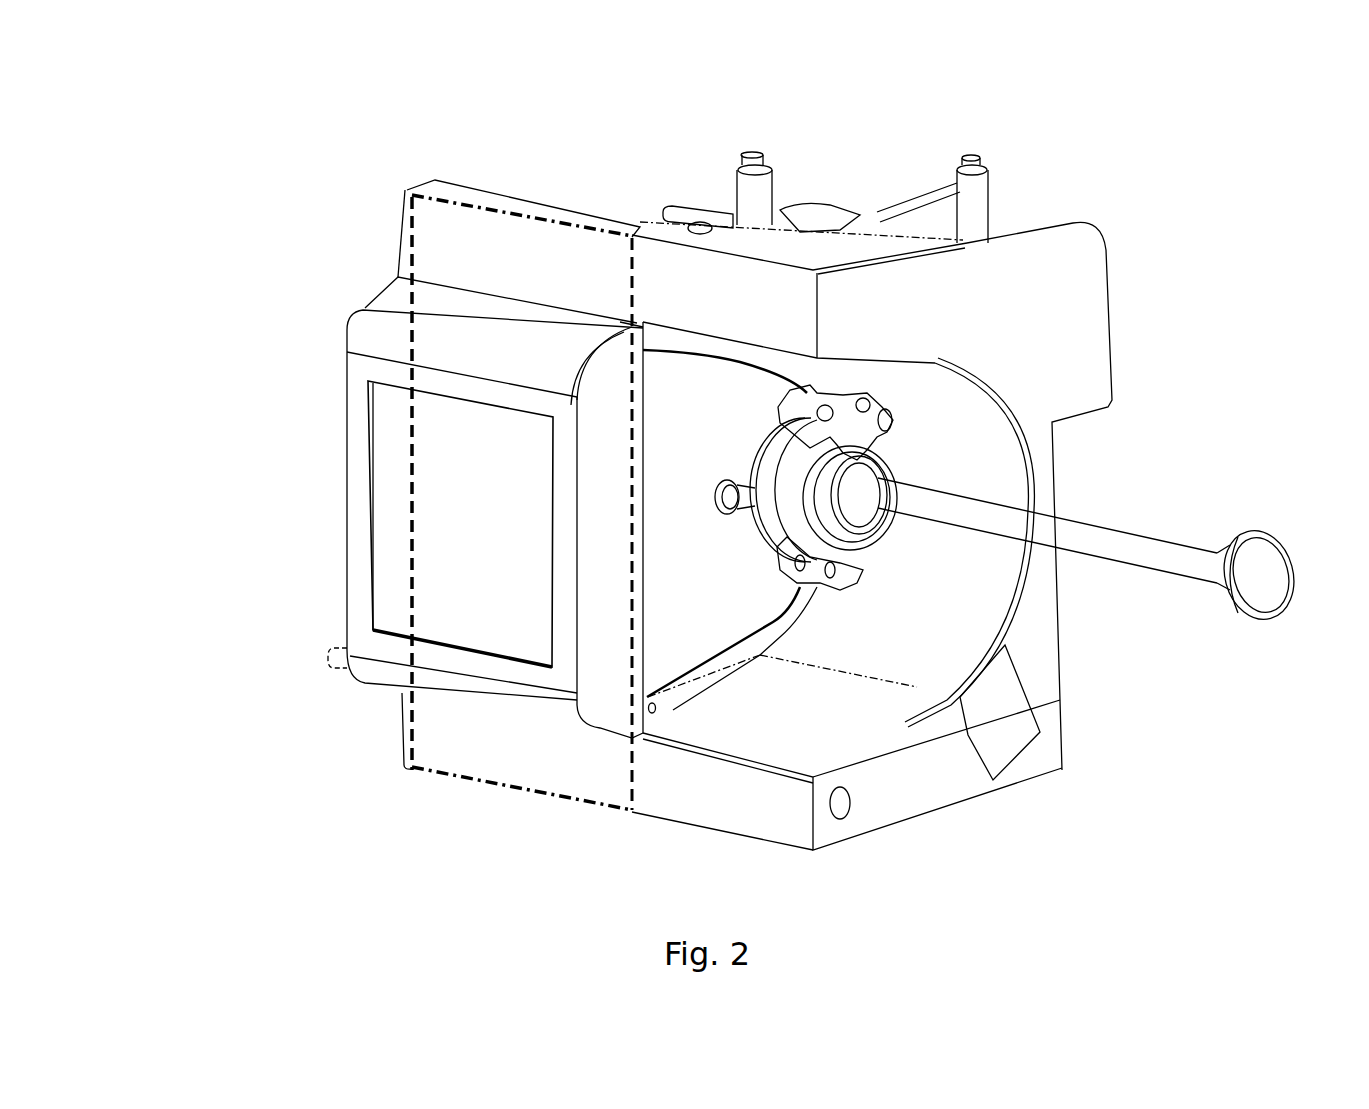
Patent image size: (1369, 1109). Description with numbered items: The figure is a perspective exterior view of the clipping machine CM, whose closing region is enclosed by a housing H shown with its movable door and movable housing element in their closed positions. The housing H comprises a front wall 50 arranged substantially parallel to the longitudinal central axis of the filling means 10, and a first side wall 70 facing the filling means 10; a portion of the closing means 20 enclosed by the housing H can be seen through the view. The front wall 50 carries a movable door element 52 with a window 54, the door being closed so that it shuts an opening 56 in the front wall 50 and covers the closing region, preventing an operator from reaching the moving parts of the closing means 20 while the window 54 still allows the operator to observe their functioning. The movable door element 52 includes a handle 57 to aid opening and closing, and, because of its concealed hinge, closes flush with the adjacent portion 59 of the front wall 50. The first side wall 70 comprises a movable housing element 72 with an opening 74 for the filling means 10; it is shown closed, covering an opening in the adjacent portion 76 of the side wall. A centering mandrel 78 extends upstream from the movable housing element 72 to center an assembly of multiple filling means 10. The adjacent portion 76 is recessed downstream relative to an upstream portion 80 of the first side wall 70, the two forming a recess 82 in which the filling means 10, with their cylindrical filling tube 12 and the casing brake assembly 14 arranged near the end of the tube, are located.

The filling means 10 is at (1238, 445).
The filling tube 12 is at (1177, 555).
The casing brake assembly 14 is at (852, 432).
The closing means 20 is at (871, 187).
The front wall 50 is at (177, 472).
The movable door element 52 is at (375, 335).
The window 54 is at (385, 510).
The opening 56 is at (410, 230).
The handle 57 is at (330, 645).
The portion of front wall 59 is at (678, 792).
The first side wall 70 is at (1063, 882).
The movable housing element 72 is at (660, 647).
The opening 74 is at (755, 437).
The portion of side wall 76 is at (767, 637).
The centering mandrel 78 is at (750, 502).
The upstream portion 80 is at (1045, 298).
The recess 82 is at (958, 617).
The clipping machine CM is at (1180, 200).
The housing H is at (325, 795).